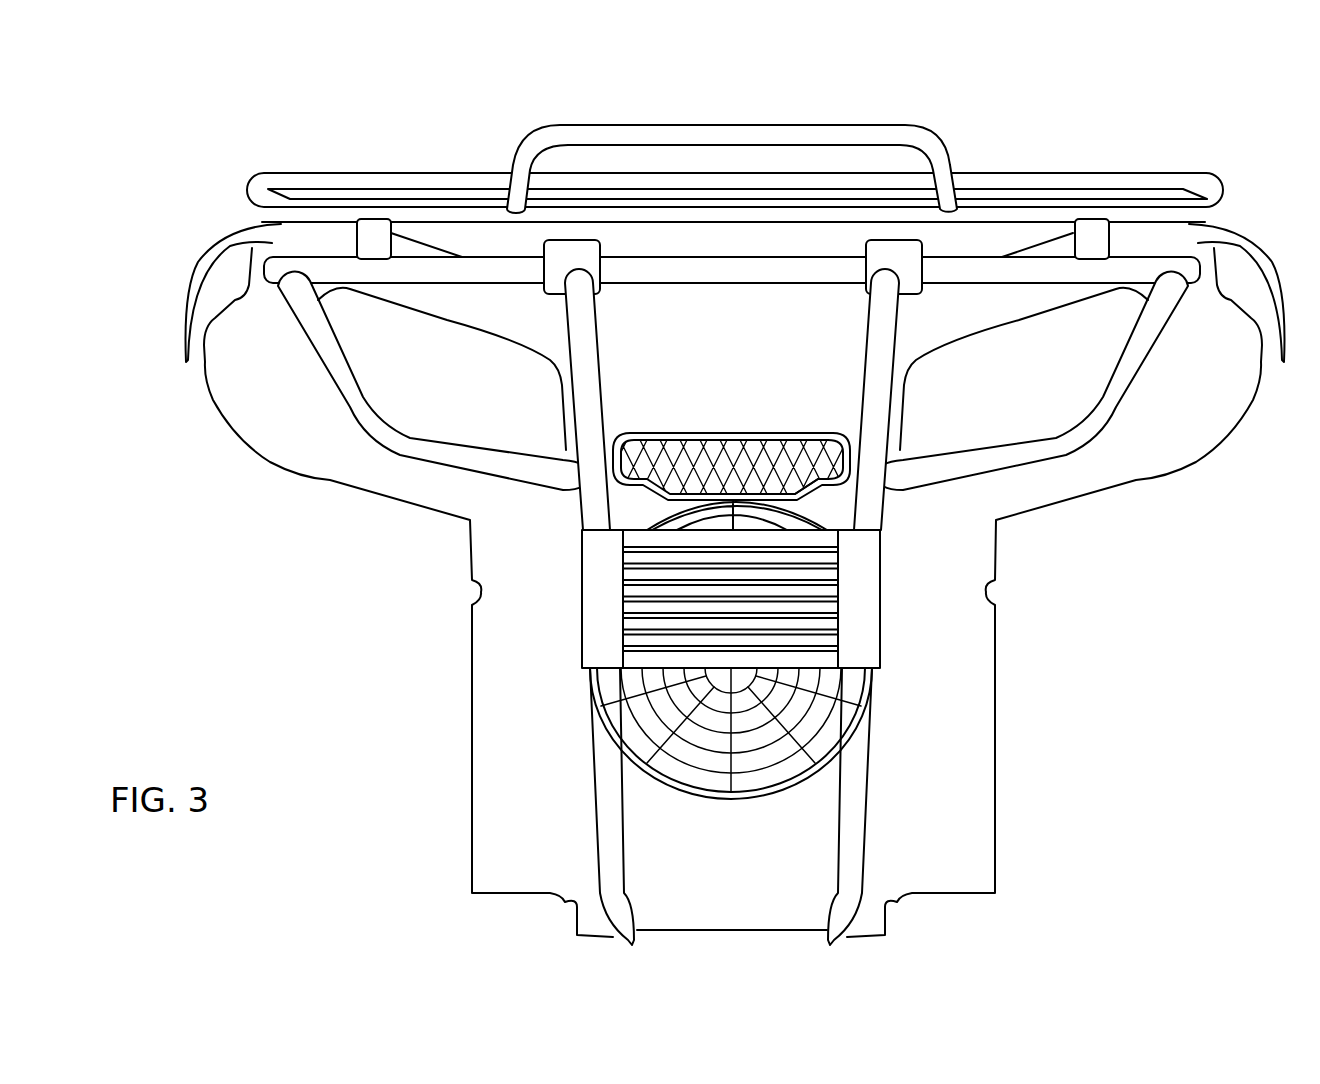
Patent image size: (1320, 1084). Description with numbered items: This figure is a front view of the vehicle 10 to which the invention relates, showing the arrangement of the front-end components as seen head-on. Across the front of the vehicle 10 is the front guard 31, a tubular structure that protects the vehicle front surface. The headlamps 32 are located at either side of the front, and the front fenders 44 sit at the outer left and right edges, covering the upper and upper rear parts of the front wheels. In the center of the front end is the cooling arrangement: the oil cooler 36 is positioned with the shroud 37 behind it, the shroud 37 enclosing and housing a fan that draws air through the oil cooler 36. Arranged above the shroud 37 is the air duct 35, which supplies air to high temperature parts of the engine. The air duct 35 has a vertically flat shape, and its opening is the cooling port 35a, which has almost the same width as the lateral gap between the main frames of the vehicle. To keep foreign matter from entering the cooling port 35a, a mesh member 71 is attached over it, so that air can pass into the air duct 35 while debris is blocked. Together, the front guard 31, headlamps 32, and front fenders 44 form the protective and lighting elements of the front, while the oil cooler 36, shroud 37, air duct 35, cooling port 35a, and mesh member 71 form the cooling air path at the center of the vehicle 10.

The vehicle 10 is at (232, 150).
The front guard 31 is at (893, 337).
The headlamps 32 is at (360, 408).
The air duct 35 is at (663, 421).
The cooling port 35a is at (736, 450).
The oil cooler 36 is at (580, 626).
The shroud 37 is at (723, 800).
The front fenders 44 is at (218, 243).
The mesh member 71 is at (798, 445).